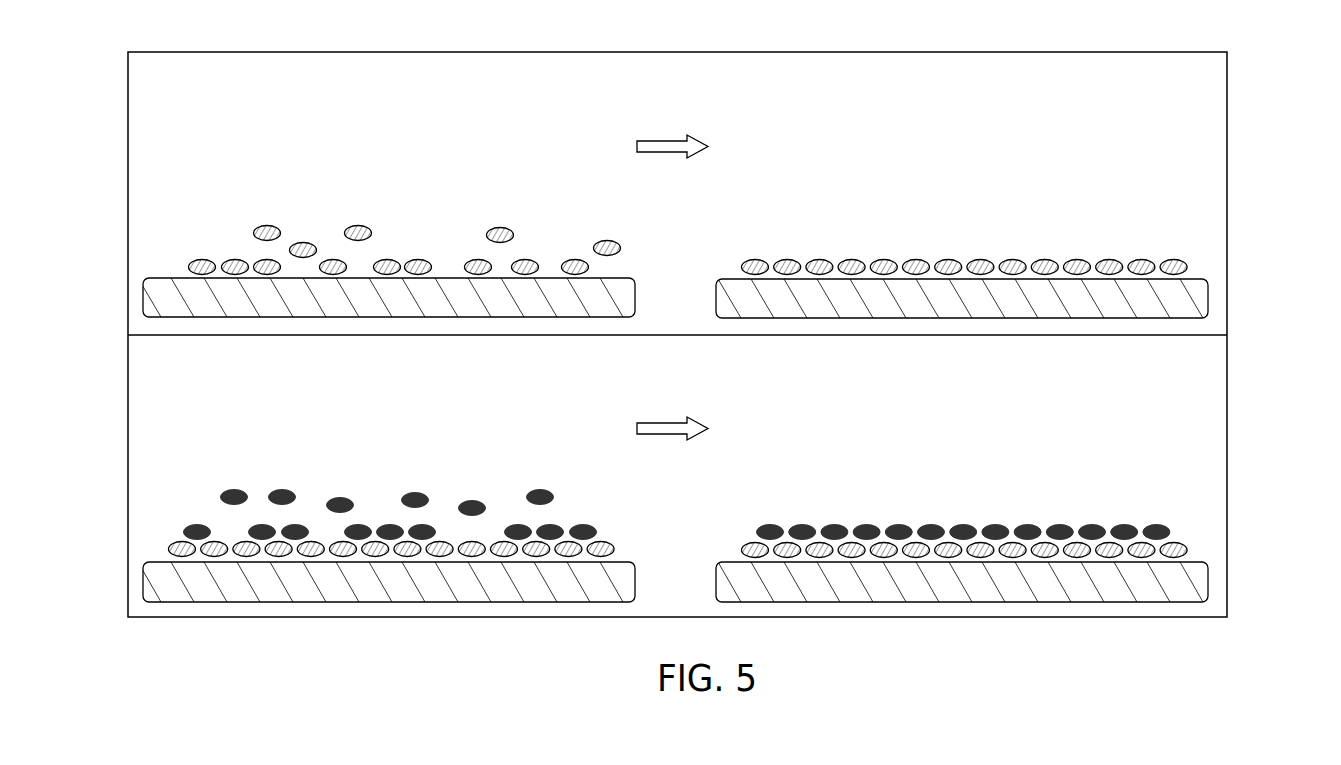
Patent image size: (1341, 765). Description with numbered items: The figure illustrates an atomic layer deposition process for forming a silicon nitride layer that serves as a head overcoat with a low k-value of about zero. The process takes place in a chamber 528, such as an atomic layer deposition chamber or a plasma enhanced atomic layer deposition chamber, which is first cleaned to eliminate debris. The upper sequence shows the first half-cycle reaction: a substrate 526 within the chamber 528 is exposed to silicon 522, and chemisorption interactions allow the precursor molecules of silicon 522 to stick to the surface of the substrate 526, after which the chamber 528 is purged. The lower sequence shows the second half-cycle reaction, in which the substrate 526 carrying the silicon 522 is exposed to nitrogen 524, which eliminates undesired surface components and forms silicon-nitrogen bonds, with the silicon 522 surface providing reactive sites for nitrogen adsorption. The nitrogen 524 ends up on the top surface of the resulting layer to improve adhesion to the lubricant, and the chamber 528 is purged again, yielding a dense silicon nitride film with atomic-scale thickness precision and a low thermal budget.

The silicon 522 is at (369, 227).
The nitrogen 524 is at (295, 491).
The substrate 526 is at (369, 310).
The chamber 528 is at (713, 208).